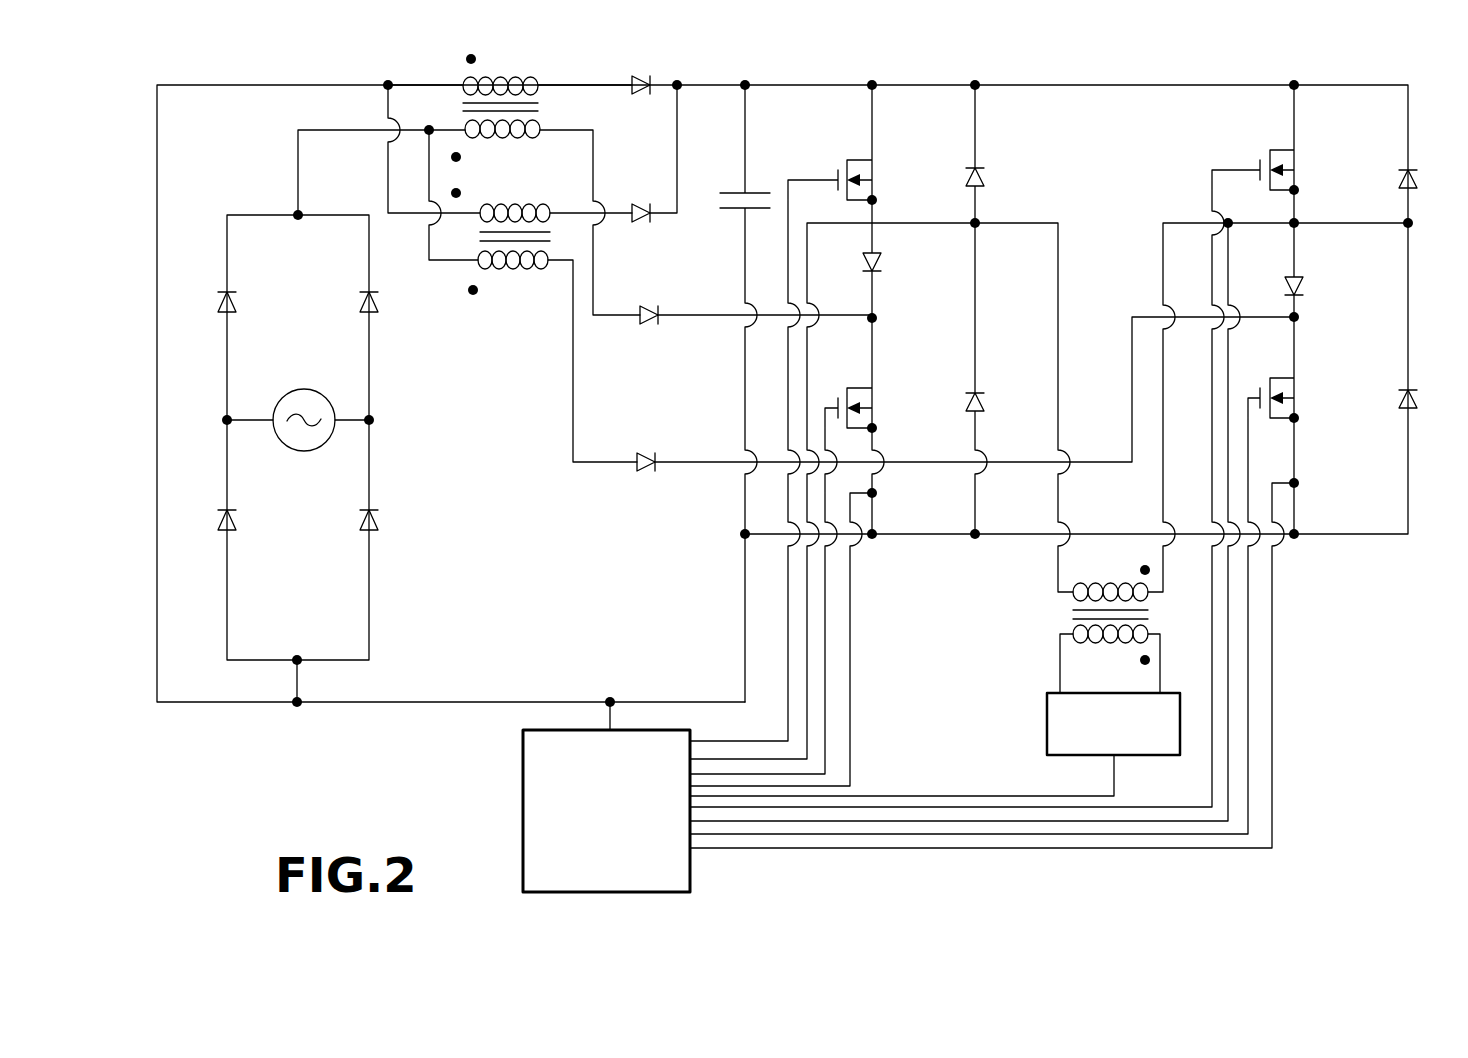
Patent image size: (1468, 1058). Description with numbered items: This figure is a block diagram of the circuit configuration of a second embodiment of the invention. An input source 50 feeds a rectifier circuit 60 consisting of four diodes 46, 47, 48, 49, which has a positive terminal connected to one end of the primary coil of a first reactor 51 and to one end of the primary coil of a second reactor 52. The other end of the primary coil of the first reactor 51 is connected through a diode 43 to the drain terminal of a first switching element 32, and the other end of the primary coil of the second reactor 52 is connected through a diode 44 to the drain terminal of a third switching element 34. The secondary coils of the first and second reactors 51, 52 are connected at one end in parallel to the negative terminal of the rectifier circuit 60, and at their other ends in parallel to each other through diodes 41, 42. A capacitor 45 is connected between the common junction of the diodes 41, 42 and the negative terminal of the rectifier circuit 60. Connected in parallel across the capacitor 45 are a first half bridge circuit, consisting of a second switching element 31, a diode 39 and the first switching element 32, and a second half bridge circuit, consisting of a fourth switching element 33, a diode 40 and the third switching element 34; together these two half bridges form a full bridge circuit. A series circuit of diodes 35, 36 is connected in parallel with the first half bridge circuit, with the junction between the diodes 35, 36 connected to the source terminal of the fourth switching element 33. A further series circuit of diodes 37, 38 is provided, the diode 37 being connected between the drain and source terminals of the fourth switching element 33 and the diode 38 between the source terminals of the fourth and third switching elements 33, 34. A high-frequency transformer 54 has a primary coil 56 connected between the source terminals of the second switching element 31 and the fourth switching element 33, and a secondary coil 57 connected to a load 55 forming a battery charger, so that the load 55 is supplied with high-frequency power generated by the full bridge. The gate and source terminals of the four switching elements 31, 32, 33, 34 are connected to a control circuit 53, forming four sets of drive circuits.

The second switching element 31 is at (864, 176).
The first switching element 32 is at (868, 410).
The fourth switching element 33 is at (1297, 178).
The third switching element 34 is at (1299, 398).
The diode 35 is at (979, 165).
The diode 36 is at (981, 392).
The diode 37 is at (1413, 222).
The diode 38 is at (1411, 412).
The diode 39 is at (876, 275).
The diode 40 is at (1298, 278).
The diode 41 is at (641, 78).
The diode 42 is at (645, 203).
The diode 43 is at (648, 307).
The diode 44 is at (649, 454).
The capacitor 45 is at (739, 192).
The diode 46 is at (222, 303).
The diode 47 is at (222, 525).
The diode 48 is at (365, 290).
The diode 49 is at (372, 510).
The AC source 50 is at (302, 389).
The first reactor 51 is at (506, 78).
The second reactor 52 is at (516, 270).
The control circuit 53 is at (690, 878).
The high-frequency transformer 54 is at (1071, 620).
The load 55 is at (1047, 728).
The primary coil 56 is at (1058, 552).
The secondary coil 57 is at (1055, 613).
The rectifier circuit 60 is at (300, 416).